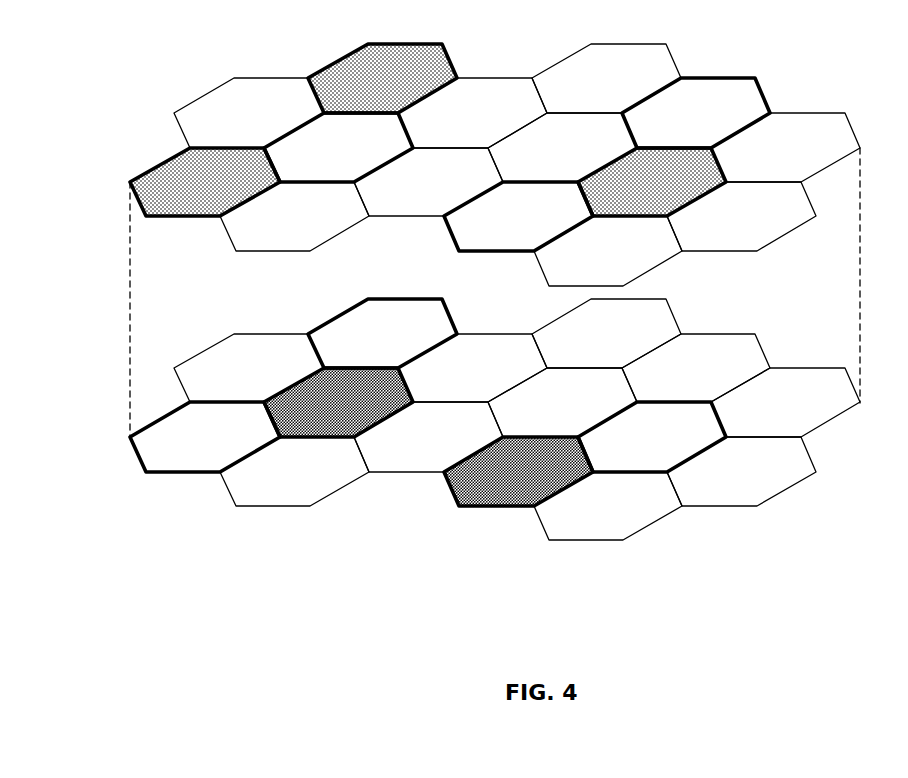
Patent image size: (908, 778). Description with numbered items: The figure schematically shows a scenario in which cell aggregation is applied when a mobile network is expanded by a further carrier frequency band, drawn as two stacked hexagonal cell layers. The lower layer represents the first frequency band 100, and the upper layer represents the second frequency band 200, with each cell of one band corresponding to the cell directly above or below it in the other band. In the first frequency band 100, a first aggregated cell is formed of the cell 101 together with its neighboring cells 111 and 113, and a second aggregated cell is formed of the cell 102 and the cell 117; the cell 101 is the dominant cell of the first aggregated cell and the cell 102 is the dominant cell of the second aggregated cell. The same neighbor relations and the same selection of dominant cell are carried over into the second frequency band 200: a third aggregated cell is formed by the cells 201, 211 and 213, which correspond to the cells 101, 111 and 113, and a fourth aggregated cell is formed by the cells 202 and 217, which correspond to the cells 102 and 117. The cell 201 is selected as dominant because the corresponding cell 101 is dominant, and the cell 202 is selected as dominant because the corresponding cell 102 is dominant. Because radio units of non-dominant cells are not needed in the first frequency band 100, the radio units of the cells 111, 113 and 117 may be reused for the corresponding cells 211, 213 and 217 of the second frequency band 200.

The first frequency band 100 is at (107, 437).
The cell 101 is at (383, 421).
The cell 102 is at (452, 494).
The cell 111 is at (136, 455).
The cell 113 is at (450, 311).
The cell 117 is at (606, 418).
The second frequency band 200 is at (107, 182).
The cell 201 is at (390, 163).
The cell 202 is at (452, 233).
The cell 211 is at (157, 165).
The cell 213 is at (452, 55).
The cell 217 is at (612, 158).